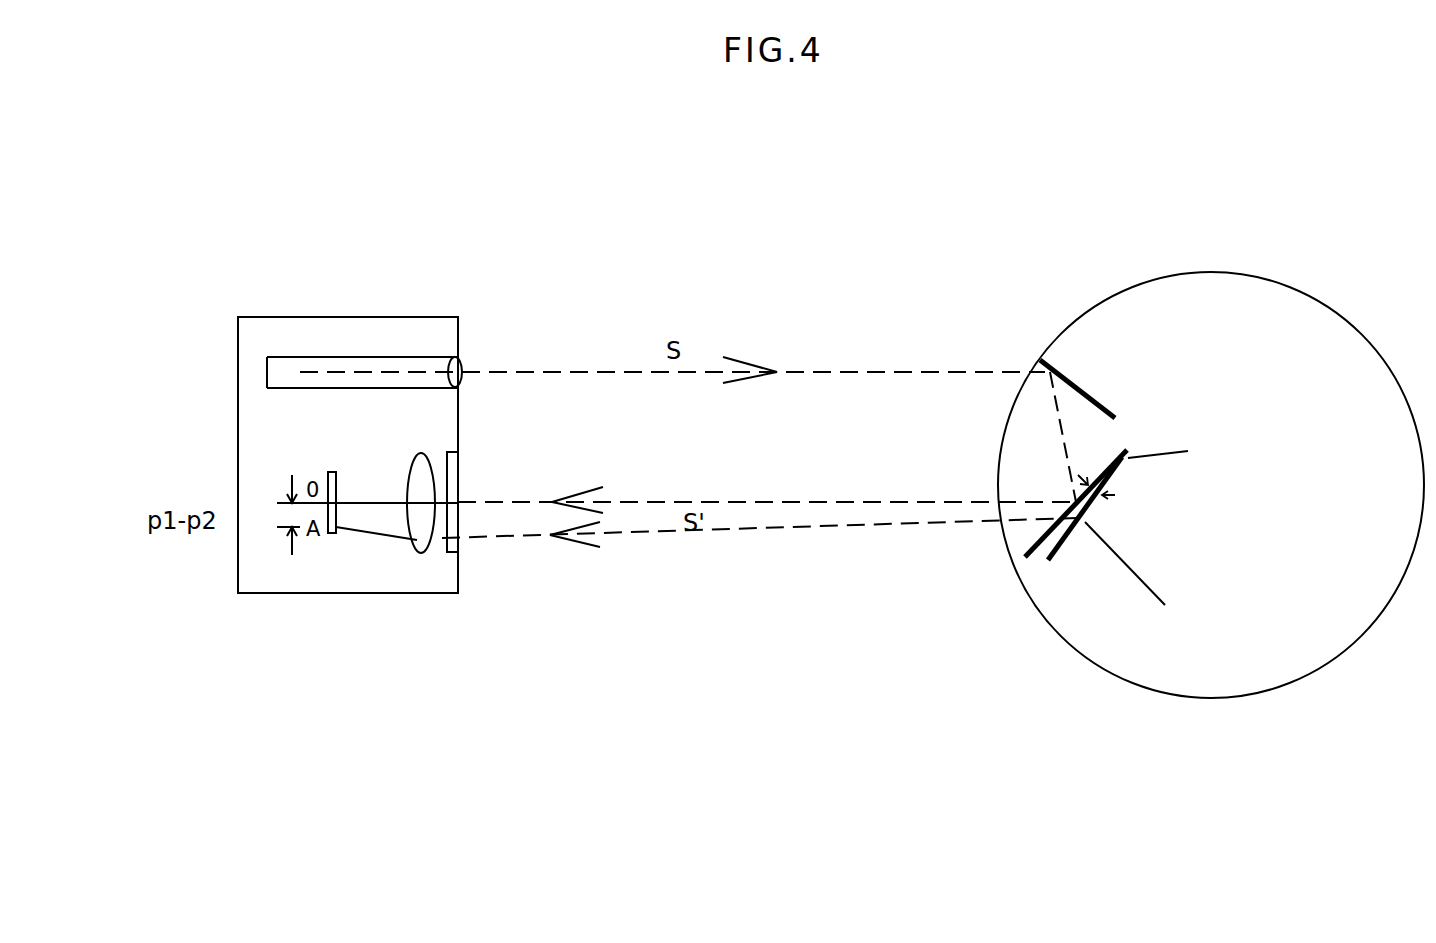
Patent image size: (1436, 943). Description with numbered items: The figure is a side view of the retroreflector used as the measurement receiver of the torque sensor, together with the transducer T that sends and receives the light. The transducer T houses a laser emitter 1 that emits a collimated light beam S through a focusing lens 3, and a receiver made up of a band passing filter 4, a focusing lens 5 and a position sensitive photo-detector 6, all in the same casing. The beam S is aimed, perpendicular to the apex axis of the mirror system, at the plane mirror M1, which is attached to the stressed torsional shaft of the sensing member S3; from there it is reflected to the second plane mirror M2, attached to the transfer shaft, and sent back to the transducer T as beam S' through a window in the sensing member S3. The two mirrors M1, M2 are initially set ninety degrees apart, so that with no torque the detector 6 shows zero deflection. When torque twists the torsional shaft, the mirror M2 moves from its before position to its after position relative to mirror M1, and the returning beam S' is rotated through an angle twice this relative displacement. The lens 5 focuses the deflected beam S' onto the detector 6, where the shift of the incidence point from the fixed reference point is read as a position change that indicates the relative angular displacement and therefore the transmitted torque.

The laser emitter 1 is at (362, 357).
The focusing lens 3 is at (462, 361).
The band passing filter 4 is at (445, 486).
The focusing lens 5 is at (418, 486).
The position sensitive photo-detector 6 is at (336, 489).
The transducer T is at (348, 434).
The sensing member S3 is at (1167, 267).
The plane mirror M1 is at (1083, 431).
The plane mirror M2 is at (1132, 528).